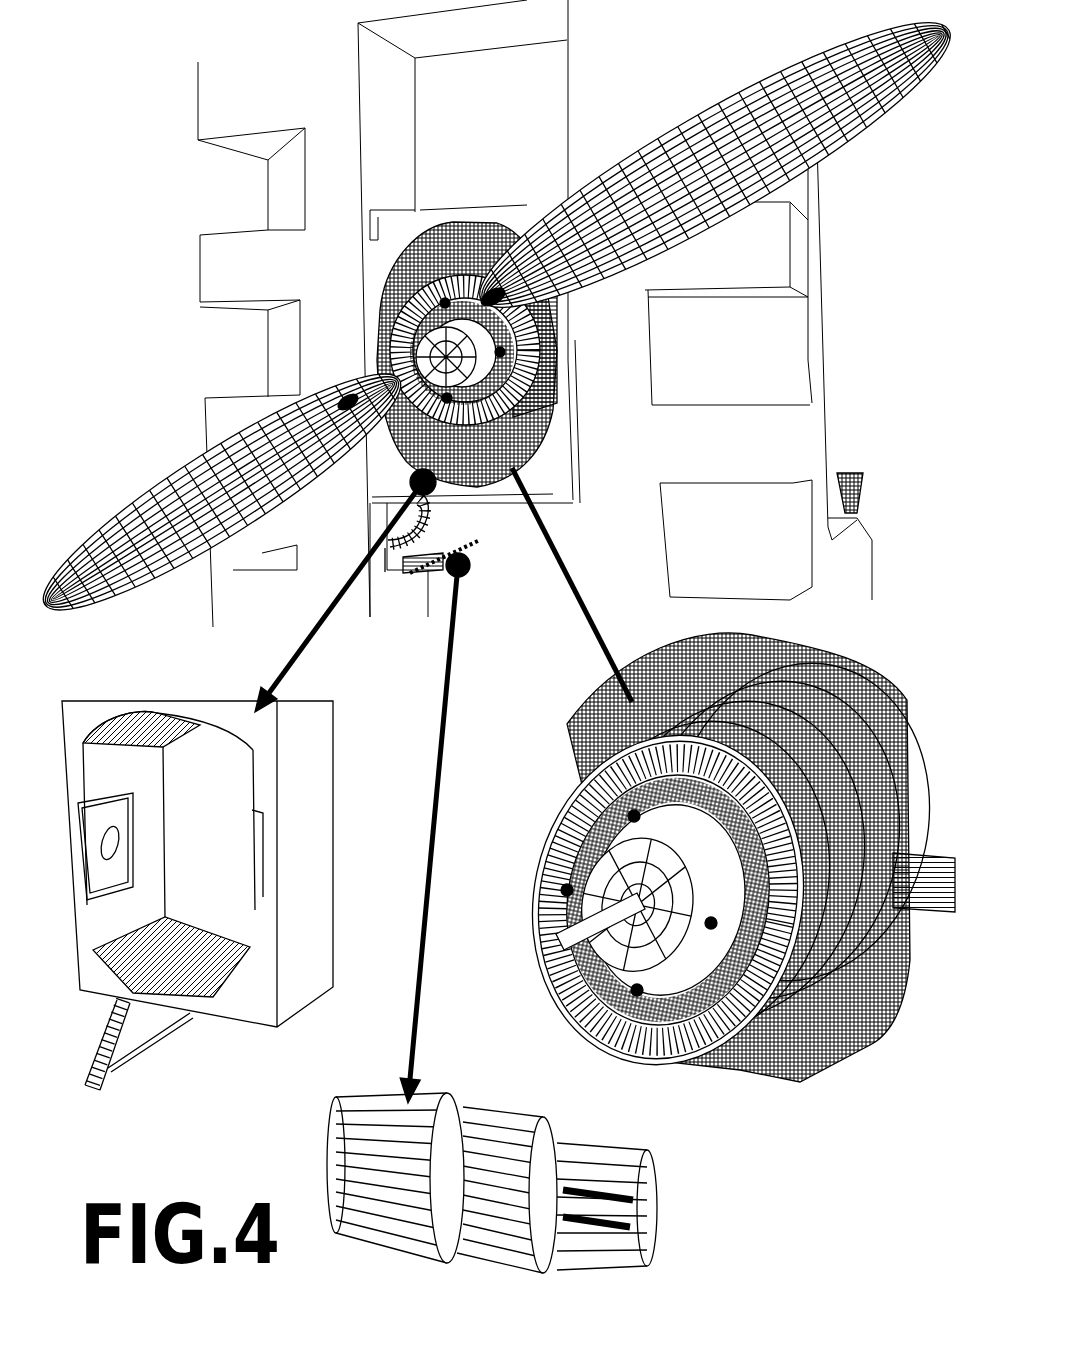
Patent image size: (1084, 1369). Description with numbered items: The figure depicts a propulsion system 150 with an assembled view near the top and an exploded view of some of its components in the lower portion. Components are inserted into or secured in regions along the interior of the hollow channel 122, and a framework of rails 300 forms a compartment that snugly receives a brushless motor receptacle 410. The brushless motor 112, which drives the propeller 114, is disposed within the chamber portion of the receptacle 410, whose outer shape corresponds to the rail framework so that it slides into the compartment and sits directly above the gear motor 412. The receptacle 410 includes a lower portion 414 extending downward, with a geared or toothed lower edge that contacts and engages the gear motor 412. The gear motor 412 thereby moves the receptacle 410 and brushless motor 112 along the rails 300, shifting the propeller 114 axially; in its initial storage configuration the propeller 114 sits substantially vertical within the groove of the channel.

The propulsion assembly 150 is at (155, 151).
The hollow channel 122 is at (383, 128).
The rails 300 is at (398, 212).
The propeller 114 is at (142, 530).
The brushless motor receptacle 410 is at (333, 747).
The gear motor 412 is at (527, 1113).
The lower portion 414 is at (113, 1063).
The brushless motor 112 is at (796, 1063).